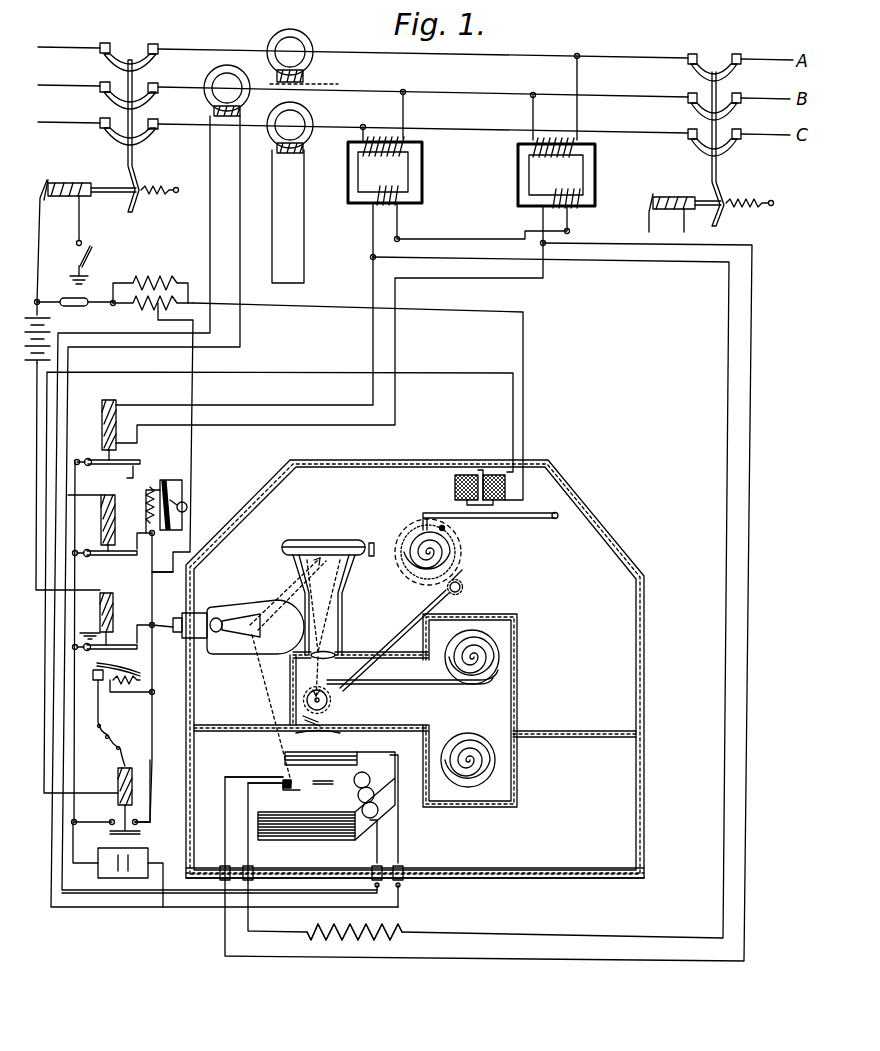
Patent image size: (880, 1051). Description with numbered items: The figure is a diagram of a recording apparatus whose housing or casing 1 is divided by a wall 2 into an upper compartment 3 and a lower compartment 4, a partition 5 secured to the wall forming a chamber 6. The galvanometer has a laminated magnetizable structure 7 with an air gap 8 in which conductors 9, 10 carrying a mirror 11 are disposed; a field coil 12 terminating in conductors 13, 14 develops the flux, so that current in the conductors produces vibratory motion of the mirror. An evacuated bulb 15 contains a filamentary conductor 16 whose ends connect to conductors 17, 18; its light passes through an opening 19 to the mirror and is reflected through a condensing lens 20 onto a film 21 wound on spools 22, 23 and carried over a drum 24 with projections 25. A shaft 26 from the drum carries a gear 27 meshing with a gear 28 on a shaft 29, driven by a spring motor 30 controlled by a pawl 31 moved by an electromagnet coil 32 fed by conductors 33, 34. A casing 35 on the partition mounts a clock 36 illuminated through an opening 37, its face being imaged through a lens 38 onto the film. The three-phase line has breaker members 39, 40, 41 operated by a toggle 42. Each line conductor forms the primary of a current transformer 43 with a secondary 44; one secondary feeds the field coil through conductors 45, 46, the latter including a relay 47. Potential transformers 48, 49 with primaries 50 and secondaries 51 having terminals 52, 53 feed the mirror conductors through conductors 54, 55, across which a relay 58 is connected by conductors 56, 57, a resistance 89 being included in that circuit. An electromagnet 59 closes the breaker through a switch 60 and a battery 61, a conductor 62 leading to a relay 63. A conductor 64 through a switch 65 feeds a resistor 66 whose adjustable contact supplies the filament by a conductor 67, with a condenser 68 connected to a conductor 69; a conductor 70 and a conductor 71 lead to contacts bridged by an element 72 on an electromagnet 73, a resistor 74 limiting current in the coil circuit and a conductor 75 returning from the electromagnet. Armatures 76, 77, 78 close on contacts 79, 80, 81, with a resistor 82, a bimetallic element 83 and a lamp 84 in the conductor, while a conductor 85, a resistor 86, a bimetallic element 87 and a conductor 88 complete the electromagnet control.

The housing or casing 1 is at (648, 590).
The wall 2 is at (230, 732).
The upper compartment 3 is at (625, 646).
The lower compartment 4 is at (618, 812).
The member or partition 5 is at (490, 614).
The chamber 6 is at (500, 693).
The laminated magnetizable structure 7 is at (318, 815).
The air gap 8 is at (303, 787).
The conductor 9 is at (252, 776).
The conductor 10 is at (282, 786).
The mirror 11 is at (284, 779).
The field coil or winding 12 is at (376, 805).
The conductor 13 is at (376, 853).
The conductor 14 is at (399, 845).
The evacuated bulb 15 is at (232, 600).
The filamentary conductor 16 is at (262, 627).
The conductor 17 is at (245, 612).
The conductor 18 is at (247, 640).
The opening 19 is at (275, 700).
The condensing lens 20 is at (330, 737).
The light-sensitive member, surface or film 21 is at (411, 686).
The spool or bobbin 22 is at (500, 656).
The spool or bobbin 23 is at (470, 765).
The drum 24 is at (328, 697).
The projections 25 is at (325, 716).
The shaft 26 is at (400, 624).
The gear 27 is at (462, 586).
The gear 28 is at (460, 580).
The shaft 29 is at (422, 550).
The spring motor 30 is at (446, 534).
The pawl 31 is at (537, 520).
The coil or winding 32 is at (454, 487).
The conductor 33 is at (512, 418).
The conductor 34 is at (524, 398).
The casing 35 is at (348, 590).
The eight day watch or clock 36 is at (324, 540).
The opening 37 is at (288, 594).
The lens 38 is at (336, 655).
The circuit breaker member 39 is at (103, 64).
The circuit breaker member 40 is at (103, 102).
The circuit breaker member 41 is at (103, 138).
The actuating member or toggle 42 is at (140, 185).
The current transformer 43 is at (205, 78).
The secondary winding 44 is at (231, 90).
The conductor 45 is at (209, 226).
The conductor 46 is at (272, 214).
The relay 47 is at (112, 496).
The potential transformer 48 is at (423, 185).
The potential transformer 49 is at (518, 192).
The primary winding 50 is at (400, 157).
The secondary winding 51 is at (370, 190).
The terminal 52 is at (372, 223).
The terminal 53 is at (399, 223).
The conductor 54 is at (640, 263).
The conductor 55 is at (707, 248).
The conductor 56 is at (372, 343).
The conductor 57 is at (397, 343).
The relay 58 is at (112, 408).
The electromagnet 59 is at (72, 200).
The switch 60 is at (90, 254).
The battery 61 is at (52, 324).
The conductor 62 is at (36, 600).
The relay 63 is at (107, 593).
The conductor 64 is at (45, 293).
The switch 65 is at (88, 298).
The resistor element 66 is at (160, 308).
The conductor 67 is at (194, 448).
The condenser 68 is at (105, 880).
The conductor 69 is at (77, 460).
The conductor 70 is at (150, 778).
The conductor 71 is at (97, 825).
The conductive element 72 is at (138, 834).
The electromagnet 73 is at (117, 780).
The resistor 74 is at (160, 283).
The conductor 75 is at (154, 560).
The armature 76 is at (140, 462).
The armature 77 is at (136, 556).
The armature 78 is at (137, 650).
The fixed contact 79 is at (138, 472).
The fixed contact 80 is at (134, 544).
The fixed contact 81 is at (130, 635).
The resistor 82 is at (148, 489).
The thermostatic or bimetallic element 83 is at (172, 490).
The incandescent lamp 84 is at (188, 505).
The conductor 85 is at (125, 694).
The resistor 86 is at (120, 677).
The thermostatic or bimetallic element 87 is at (107, 669).
The conductor 88 is at (97, 695).
The resistance 89 is at (385, 925).